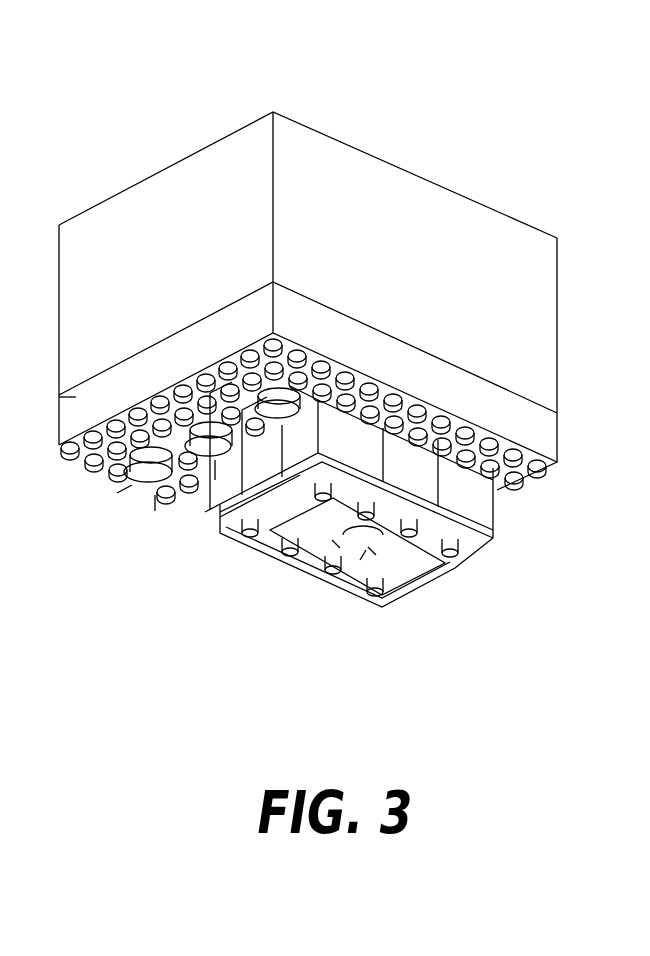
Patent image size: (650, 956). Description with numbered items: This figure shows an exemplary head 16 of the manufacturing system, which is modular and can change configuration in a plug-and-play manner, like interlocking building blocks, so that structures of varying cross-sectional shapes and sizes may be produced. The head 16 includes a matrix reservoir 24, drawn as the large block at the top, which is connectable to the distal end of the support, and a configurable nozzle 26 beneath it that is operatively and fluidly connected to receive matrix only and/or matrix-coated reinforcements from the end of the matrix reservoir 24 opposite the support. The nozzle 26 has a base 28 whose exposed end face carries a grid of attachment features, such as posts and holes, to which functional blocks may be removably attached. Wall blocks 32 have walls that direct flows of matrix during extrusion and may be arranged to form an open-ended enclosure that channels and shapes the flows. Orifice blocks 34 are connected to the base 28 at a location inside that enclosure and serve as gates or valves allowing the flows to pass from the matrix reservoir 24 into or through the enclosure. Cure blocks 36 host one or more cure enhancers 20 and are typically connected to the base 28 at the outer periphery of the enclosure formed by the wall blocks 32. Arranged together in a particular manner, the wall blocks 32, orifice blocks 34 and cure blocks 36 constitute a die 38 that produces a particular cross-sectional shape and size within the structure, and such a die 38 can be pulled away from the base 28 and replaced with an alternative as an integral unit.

The head 16 is at (109, 103).
The cure enhancers 20 is at (268, 386).
The matrix reservoir 24 is at (427, 242).
The configurable nozzle 26 is at (570, 410).
The base 28 is at (59, 397).
The wall blocks 32 is at (452, 470).
The orifice blocks 34 is at (220, 517).
The cure blocks 36 is at (270, 342).
The die 38 is at (520, 470).